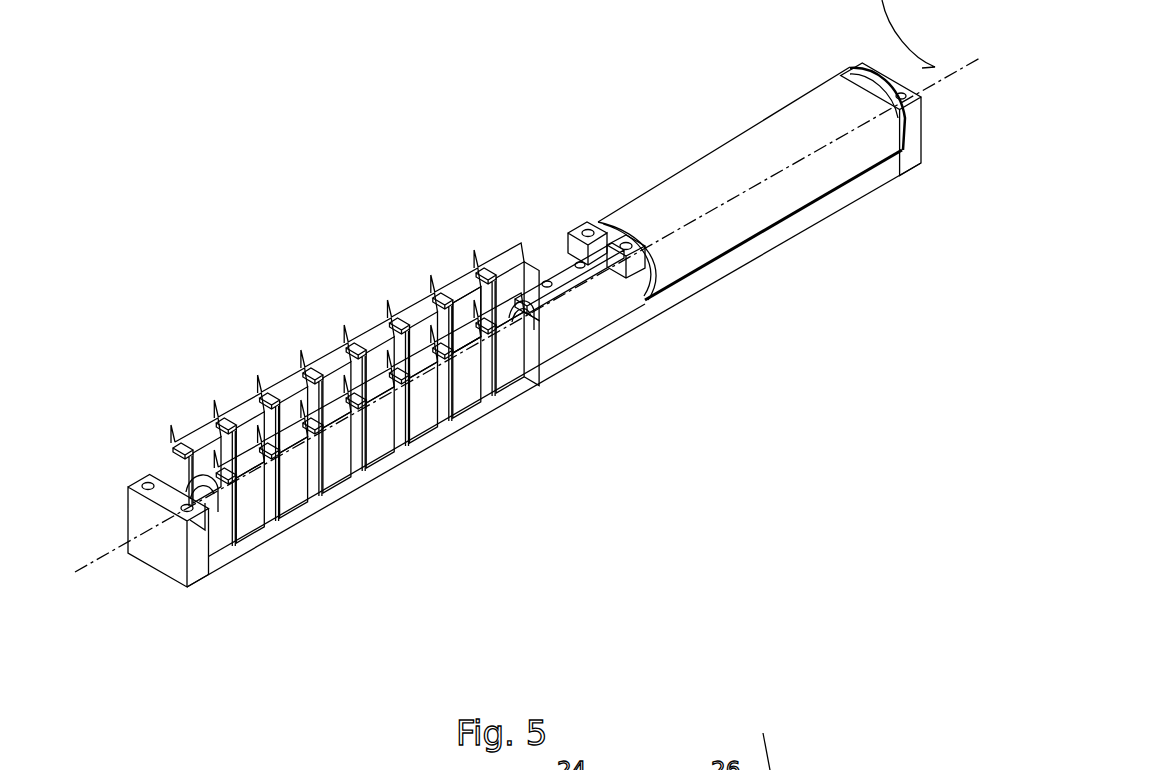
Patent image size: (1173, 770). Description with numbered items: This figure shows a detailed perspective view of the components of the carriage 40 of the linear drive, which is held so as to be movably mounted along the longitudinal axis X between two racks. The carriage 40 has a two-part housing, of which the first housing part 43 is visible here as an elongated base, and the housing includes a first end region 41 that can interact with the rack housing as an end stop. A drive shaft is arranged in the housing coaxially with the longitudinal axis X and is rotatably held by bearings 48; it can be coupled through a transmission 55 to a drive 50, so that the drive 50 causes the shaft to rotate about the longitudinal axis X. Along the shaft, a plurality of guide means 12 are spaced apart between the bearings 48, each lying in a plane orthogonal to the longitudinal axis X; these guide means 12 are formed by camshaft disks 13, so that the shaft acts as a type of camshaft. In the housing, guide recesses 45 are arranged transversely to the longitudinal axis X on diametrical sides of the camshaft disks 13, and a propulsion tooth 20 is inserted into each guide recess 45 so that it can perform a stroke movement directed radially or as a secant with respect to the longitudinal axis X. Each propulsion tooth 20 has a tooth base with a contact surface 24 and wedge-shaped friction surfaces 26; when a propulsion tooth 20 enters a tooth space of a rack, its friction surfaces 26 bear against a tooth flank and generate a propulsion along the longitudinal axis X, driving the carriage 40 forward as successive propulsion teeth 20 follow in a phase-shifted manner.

The carriage 40 is at (268, 250).
The guide means 12 is at (426, 262).
The camshaft disks 13 is at (440, 327).
The propulsion tooth 20 is at (338, 472).
The contact surface 24 is at (335, 417).
The friction surfaces 26 is at (330, 340).
The first end region 41 is at (128, 518).
The first housing part 43 is at (605, 320).
The guide recesses 45 is at (365, 422).
The bearings 48 is at (207, 522).
The drive 50 is at (773, 143).
The transmission 55 is at (543, 282).
The longitudinal axis X is at (697, 220).